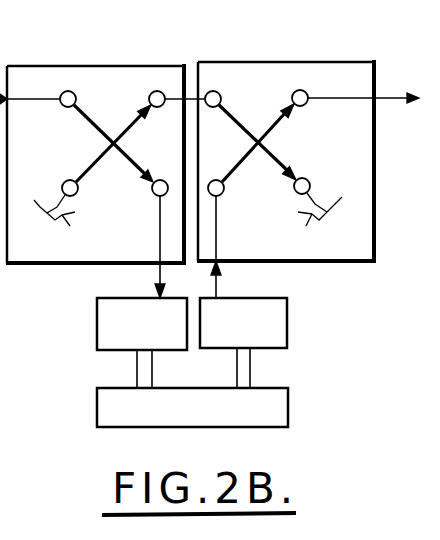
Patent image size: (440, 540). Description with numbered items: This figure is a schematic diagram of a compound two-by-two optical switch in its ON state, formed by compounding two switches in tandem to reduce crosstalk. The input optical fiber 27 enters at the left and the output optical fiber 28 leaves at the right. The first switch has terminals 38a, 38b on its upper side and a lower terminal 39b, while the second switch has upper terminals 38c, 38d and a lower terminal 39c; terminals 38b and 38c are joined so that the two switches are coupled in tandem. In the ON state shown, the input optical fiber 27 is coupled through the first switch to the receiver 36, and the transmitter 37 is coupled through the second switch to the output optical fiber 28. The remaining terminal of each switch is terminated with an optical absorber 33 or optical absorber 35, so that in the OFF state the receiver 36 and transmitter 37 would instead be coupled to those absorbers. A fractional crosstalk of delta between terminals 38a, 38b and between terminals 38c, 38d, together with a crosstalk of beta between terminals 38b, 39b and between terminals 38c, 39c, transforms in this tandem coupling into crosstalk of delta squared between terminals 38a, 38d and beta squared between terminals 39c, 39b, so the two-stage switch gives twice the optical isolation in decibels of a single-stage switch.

The input optical fiber 27 is at (0, 58).
The output optical fiber 28 is at (388, 97).
The terminal 38a is at (70, 91).
The terminal 38b is at (157, 91).
The terminal 38c is at (213, 91).
The terminal 38d is at (302, 90).
The terminal 39b is at (160, 180).
The terminal 39c is at (216, 180).
The optical absorber 33 is at (75, 212).
The optical absorber 35 is at (298, 212).
The receiver 36 is at (97, 320).
The transmitter 37 is at (288, 322).